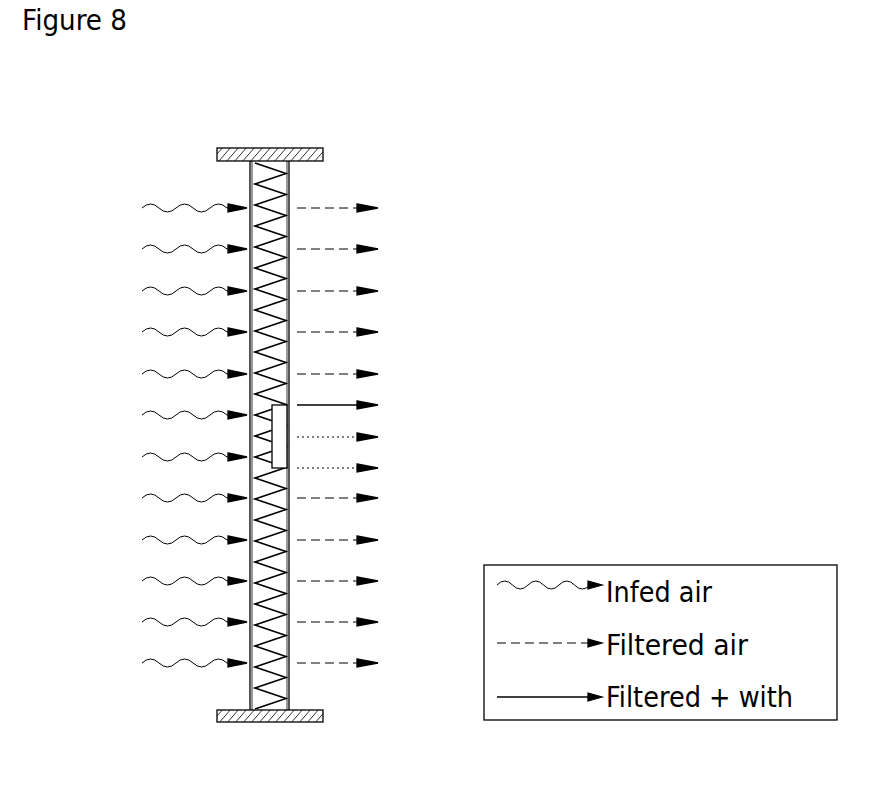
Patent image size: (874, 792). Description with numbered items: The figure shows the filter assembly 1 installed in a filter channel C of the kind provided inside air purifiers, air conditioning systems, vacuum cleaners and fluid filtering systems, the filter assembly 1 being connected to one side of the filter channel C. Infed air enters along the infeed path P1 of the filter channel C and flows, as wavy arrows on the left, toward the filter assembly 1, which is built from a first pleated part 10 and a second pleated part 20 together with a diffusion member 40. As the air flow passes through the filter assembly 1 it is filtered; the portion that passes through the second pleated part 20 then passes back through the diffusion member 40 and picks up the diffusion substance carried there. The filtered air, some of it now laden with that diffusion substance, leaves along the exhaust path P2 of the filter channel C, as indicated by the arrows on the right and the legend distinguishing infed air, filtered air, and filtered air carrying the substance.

The filter assembly 1 is at (270, 428).
The first pleated part 10 is at (248, 305).
The second pleated part 20 is at (262, 436).
The diffusion member 40 is at (289, 430).
The filter channel C is at (270, 147).
The infeed path P1 is at (236, 230).
The exhaust path P2 is at (307, 230).